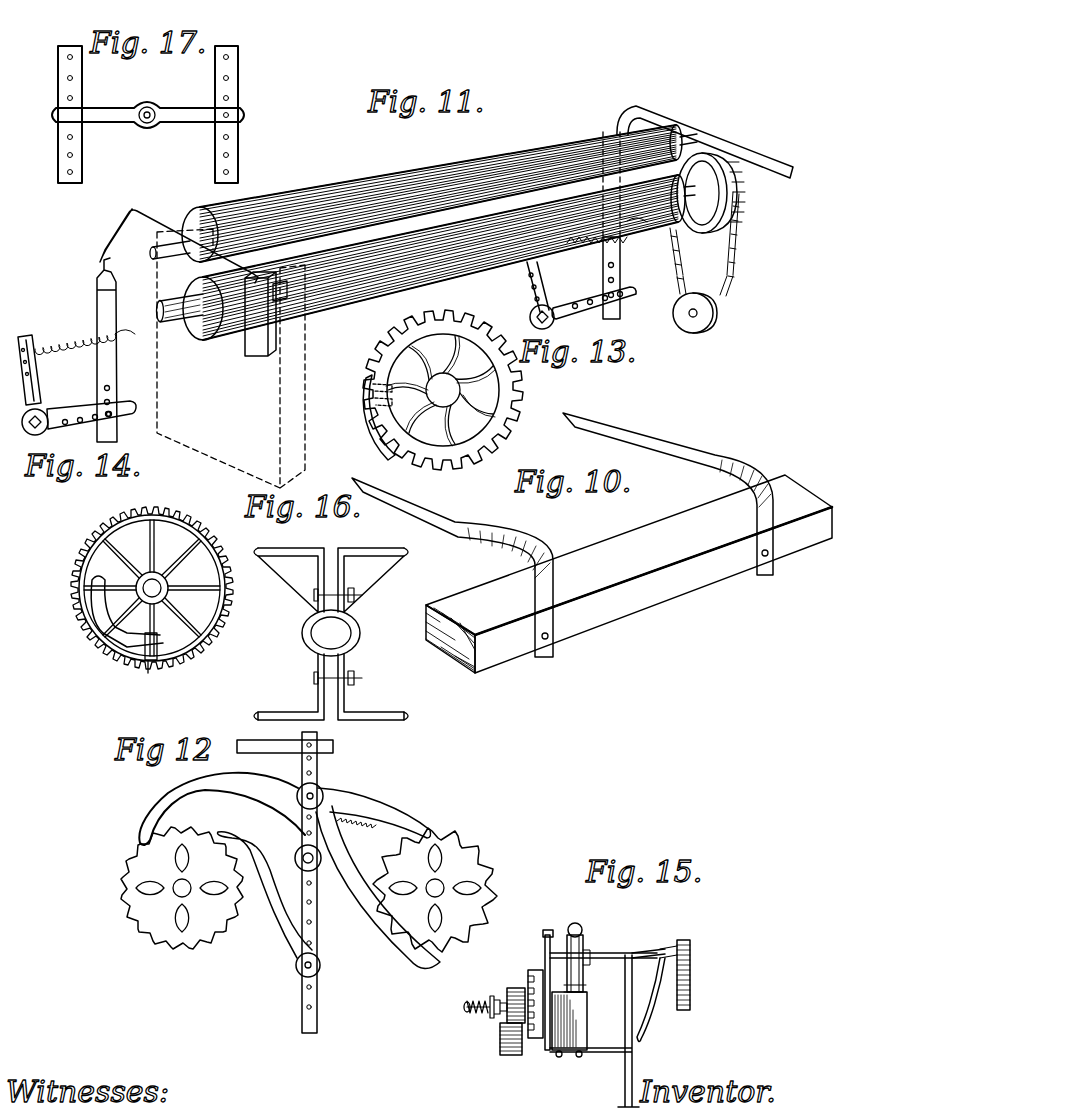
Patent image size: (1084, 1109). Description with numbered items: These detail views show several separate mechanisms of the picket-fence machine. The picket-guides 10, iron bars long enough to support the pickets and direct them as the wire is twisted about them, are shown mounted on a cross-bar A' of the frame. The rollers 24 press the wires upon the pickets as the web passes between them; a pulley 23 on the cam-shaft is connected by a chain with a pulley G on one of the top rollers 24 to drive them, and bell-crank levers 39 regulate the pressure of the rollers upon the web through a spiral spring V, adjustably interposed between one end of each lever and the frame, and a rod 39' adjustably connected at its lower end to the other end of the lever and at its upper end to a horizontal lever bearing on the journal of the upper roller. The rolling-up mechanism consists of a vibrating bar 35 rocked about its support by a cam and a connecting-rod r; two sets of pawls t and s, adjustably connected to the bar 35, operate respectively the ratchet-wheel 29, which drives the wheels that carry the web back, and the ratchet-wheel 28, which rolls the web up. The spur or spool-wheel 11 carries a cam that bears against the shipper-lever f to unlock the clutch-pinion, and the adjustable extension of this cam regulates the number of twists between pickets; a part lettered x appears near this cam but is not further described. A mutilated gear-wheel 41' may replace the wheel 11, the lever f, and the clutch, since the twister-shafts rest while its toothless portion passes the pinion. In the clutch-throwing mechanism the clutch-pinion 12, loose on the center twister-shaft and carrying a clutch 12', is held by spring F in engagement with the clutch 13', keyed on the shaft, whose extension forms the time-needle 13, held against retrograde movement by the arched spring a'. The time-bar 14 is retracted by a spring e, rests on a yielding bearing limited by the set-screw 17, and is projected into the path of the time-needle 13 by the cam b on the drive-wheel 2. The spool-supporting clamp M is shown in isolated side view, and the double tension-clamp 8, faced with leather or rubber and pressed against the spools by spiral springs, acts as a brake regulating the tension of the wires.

In FIG. 17, the double tension-clamp 8 is at (148, 108).
In FIG. 11, the rollers 24 is at (433, 232).
In FIG. 11, the bell-crank levers 39 is at (581, 295).
In FIG. 14, the bell-crank levers 39 is at (77, 385).
In FIG. 11, the rod 39' is at (626, 278).
In FIG. 14, the rod 39' is at (120, 350).
In FIG. 11, the spiral spring V is at (586, 240).
In FIG. 14, the spiral spring V is at (85, 329).
In FIG. 11, the pulley G is at (711, 193).
In FIG. 11, the pulley 23 is at (703, 319).
In FIG. 13, the mutilated gear-wheel 41' is at (437, 390).
In FIG. 16, the spur-wheel 11 is at (182, 521).
In FIG. 15, the spur-wheel 11 is at (502, 1040).
In FIG. 16, the shipper-lever f is at (92, 610).
In FIG. 16, the stop x is at (175, 634).
In FIG. 16, the clamp bracket M is at (308, 618).
In FIG. 10, the cross-bars A' is at (629, 574).
In FIG. 15, the cross-bars A' is at (562, 1049).
In FIG. 10, the picket-guides 10 is at (428, 520).
In FIG. 12, the vibrating bar 35 is at (322, 882).
In FIG. 12, the connecting-rod r is at (280, 737).
In FIG. 12, the pawls t is at (217, 865).
In FIG. 12, the pawls s is at (378, 878).
In FIG. 12, the ratchet-wheel 29 is at (182, 888).
In FIG. 12, the ratchet-wheel 28 is at (435, 890).
In FIG. 15, the arched spring a' is at (535, 990).
In FIG. 15, the time-needle 13 is at (558, 917).
In FIG. 15, the clutch 13' is at (516, 964).
In FIG. 15, the adjustable stop or set-screw 17 is at (586, 990).
In FIG. 15, the clutch-pinion 12 is at (517, 994).
In FIG. 15, the clutch 12' is at (524, 1031).
In FIG. 15, the spring F is at (470, 1000).
In FIG. 15, the time-bar 14 is at (650, 951).
In FIG. 15, the spring e is at (668, 948).
In FIG. 15, the cam b is at (690, 942).
In FIG. 15, the drive-wheel 2 is at (692, 972).